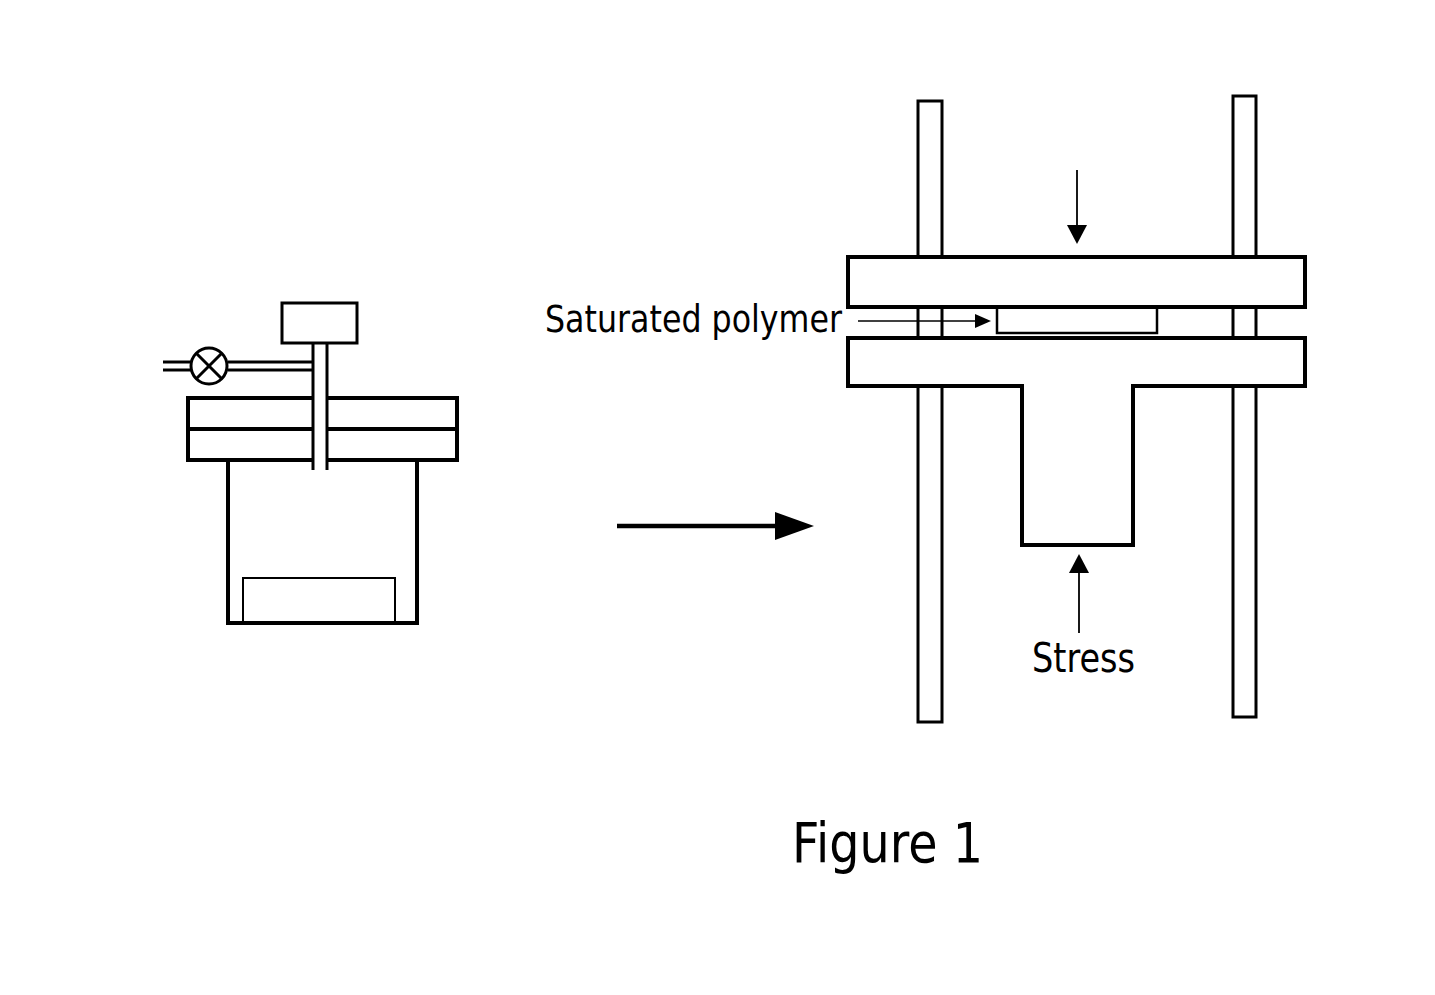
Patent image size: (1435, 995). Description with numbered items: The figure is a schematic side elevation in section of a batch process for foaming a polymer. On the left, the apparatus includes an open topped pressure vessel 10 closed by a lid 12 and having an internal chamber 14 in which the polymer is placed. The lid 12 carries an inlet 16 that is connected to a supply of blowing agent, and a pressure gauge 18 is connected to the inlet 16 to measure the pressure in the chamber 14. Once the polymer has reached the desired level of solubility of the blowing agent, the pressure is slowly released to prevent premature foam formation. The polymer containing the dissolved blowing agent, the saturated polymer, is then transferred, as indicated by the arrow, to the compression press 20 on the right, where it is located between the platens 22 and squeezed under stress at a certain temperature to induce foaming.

The pressure vessel 10 is at (225, 523).
The lid 12 is at (378, 412).
The internal chamber 14 is at (397, 517).
The inlet 16 is at (272, 362).
The pressure gauge 18 is at (311, 302).
The compression press 20 is at (923, 212).
The platens 22 is at (1283, 268).